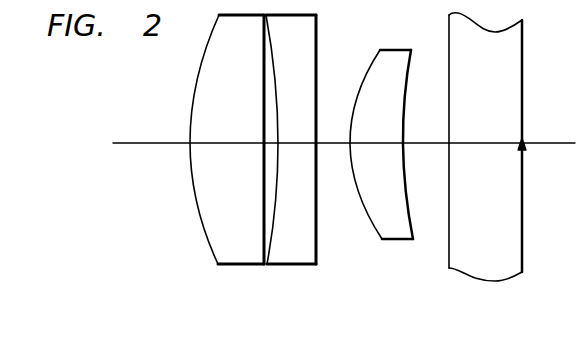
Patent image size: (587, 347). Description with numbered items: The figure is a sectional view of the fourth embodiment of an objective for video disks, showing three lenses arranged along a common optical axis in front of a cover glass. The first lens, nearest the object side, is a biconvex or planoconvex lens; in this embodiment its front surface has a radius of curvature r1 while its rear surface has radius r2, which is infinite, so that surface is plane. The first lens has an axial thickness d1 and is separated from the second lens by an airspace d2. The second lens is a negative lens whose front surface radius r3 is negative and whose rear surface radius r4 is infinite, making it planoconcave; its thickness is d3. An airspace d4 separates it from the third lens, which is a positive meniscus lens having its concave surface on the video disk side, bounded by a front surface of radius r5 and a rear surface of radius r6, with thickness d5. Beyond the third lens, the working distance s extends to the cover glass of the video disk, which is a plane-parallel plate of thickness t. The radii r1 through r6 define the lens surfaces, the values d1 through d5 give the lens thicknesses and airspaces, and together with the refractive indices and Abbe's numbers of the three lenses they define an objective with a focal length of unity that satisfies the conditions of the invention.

The radius of curvature of the first lens surface r1 is at (207, 241).
The radius of curvature of the second lens surface r2 is at (263, 246).
The radius of curvature of the third lens surface r3 is at (270, 244).
The radius of curvature of the fourth lens surface r4 is at (317, 254).
The radius of curvature of the fifth lens surface r5 is at (375, 226).
The radius of curvature of the sixth lens surface r6 is at (413, 226).
The thickness of the first lens d1 is at (211, 141).
The airspace between the first and second lenses d2 is at (268, 142).
The thickness of the second lens d3 is at (296, 141).
The airspace between the second and third lenses d4 is at (329, 141).
The thickness of the third lens d5 is at (368, 141).
The working distance s is at (424, 141).
The thickness of cover glass t is at (476, 141).